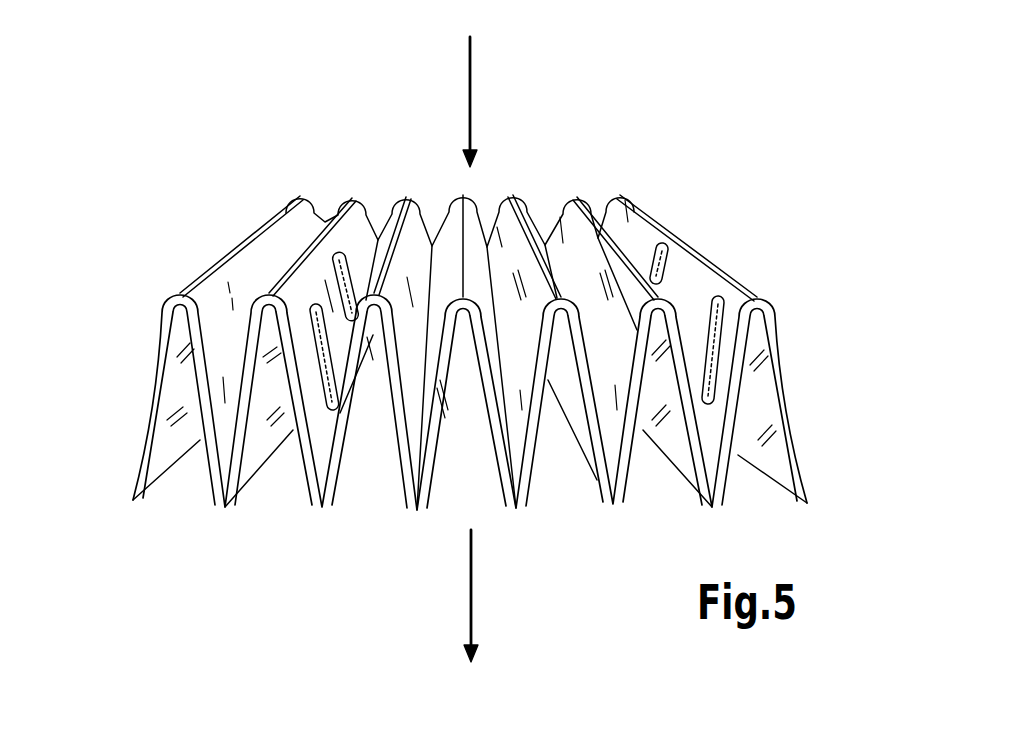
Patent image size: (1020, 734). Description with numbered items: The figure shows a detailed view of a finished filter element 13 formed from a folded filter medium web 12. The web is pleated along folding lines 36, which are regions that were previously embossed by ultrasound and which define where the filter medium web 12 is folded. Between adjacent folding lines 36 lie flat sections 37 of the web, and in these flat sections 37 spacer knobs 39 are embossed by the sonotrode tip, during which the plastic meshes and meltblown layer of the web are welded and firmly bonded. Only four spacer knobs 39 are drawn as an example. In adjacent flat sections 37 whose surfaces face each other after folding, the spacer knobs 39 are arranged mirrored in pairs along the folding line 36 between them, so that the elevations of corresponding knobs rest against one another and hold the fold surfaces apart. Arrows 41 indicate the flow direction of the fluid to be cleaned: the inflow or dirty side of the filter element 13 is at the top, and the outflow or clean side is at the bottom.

The filter medium web 12 is at (308, 216).
The filter element 13 is at (233, 217).
The folding lines 36 is at (727, 271).
The flat sections 37 is at (342, 225).
The spacer knobs 39 is at (345, 255).
The arrows 41 is at (471, 90).